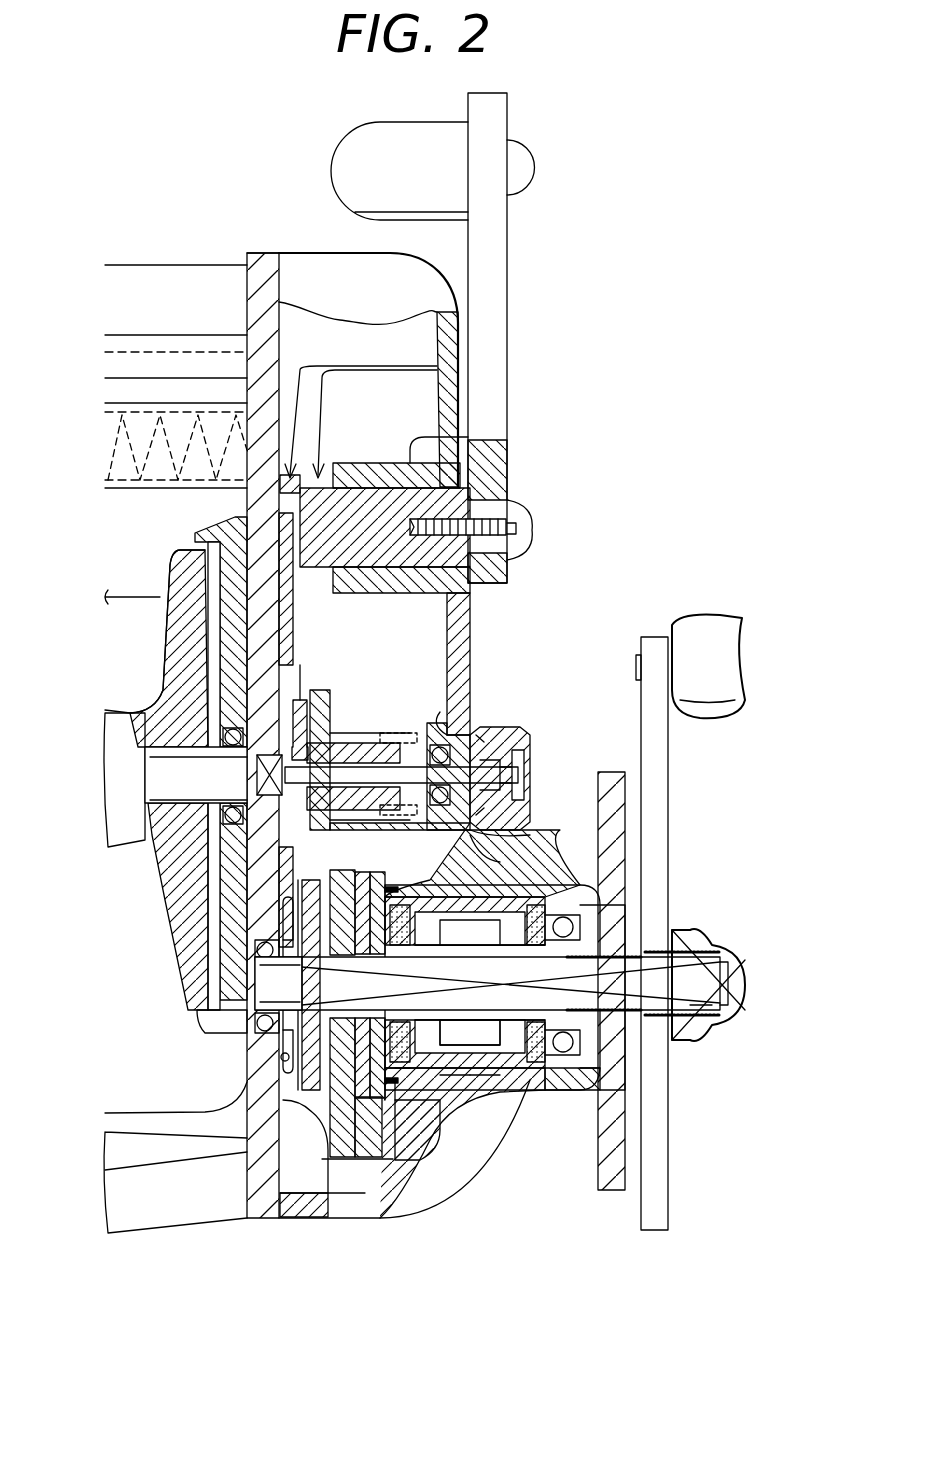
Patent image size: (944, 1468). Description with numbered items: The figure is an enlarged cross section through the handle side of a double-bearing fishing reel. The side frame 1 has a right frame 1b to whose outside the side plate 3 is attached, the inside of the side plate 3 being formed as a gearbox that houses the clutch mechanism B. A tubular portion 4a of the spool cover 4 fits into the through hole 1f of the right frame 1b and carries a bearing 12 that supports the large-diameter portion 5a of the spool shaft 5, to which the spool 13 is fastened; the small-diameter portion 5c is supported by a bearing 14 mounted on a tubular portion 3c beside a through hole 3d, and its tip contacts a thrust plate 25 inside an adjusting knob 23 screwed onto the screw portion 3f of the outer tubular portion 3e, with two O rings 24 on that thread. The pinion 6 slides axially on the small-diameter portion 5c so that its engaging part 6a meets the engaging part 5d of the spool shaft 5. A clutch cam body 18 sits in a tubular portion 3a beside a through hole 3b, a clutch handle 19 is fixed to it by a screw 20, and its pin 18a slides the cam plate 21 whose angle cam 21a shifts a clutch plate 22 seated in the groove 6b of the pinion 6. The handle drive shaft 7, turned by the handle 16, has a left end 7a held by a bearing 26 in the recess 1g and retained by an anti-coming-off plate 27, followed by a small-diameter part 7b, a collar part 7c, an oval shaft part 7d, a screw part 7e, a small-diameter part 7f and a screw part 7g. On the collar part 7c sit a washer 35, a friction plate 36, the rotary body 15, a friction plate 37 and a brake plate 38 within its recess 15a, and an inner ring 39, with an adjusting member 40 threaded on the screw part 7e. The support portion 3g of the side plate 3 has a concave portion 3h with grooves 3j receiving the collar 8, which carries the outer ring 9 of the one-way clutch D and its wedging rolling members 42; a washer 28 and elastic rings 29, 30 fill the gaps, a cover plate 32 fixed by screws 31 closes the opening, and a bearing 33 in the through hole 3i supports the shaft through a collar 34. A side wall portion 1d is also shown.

The side frame 1 is at (266, 250).
The right frame 1b is at (260, 250).
The side wall portion 1d is at (150, 597).
The through hole 1f is at (165, 698).
The recess 1g is at (255, 945).
The side plate 3 is at (316, 250).
The tubular portion 3a is at (480, 438).
The through hole 3b is at (462, 492).
The tubular portion 3c is at (482, 738).
The through hole 3d is at (522, 775).
The tubular portion 3e is at (520, 806).
The screw portion 3f is at (523, 818).
The support portion 3g is at (550, 1092).
The concave portion 3h is at (540, 1092).
The through hole 3i is at (590, 908).
The grooves 3j is at (590, 885).
The spool cover 4 is at (196, 533).
The tubular portion 4a is at (275, 668).
The spool shaft 5 is at (132, 843).
The large-diameter portion 5a is at (222, 748).
The small-diameter portion 5c is at (520, 792).
The engaging part 5d is at (142, 775).
The pinion 6 is at (452, 742).
The engaging part 6a is at (257, 787).
The groove 6b is at (315, 724).
The handle drive shaft 7 is at (716, 983).
The left end 7a is at (280, 985).
The small-diameter part 7b is at (255, 940).
The collar part 7c is at (280, 933).
The shaft part 7d is at (105, 1170).
The screw part 7e is at (690, 1027).
The small-diameter part 7f is at (730, 980).
The screw part 7g is at (717, 993).
The collar 8 is at (490, 1075).
The outer ring 9 is at (455, 1072).
The bearing 12 is at (223, 732).
The spool 13 is at (205, 570).
The bearing 14 is at (518, 732).
The rotary body 15 is at (337, 1165).
The recess 15a is at (357, 1162).
The handle 16 is at (668, 1162).
The clutch cam body 18 is at (300, 368).
The pin 18a is at (230, 490).
The clutch handle 19 is at (503, 226).
The screw 20 is at (522, 504).
The cam plate 21 is at (445, 337).
The angle cam 21a is at (462, 594).
The clutch plate 22 is at (305, 668).
The adjusting knob 23 is at (532, 736).
The O rings 24 is at (477, 824).
The thrust plate 25 is at (526, 755).
The bearing 26 is at (282, 962).
The anti-coming-off plate 27 is at (300, 1092).
The washer 28 is at (412, 897).
The elastic ring 29 is at (380, 1066).
The elastic ring 30 is at (535, 903).
The screws 31 is at (387, 1060).
The cover plate 32 is at (363, 1072).
The bearing 33 is at (578, 1055).
The collar 34 is at (575, 946).
The washer 35 is at (305, 1110).
The friction plate 36 is at (328, 1140).
The friction plate 37 is at (360, 1100).
The brake plate 38 is at (382, 1090).
The inner ring 39 is at (398, 1068).
The adjusting member 40 is at (612, 1195).
The rolling member 42 is at (412, 1073).
The clutch mechanism B is at (435, 716).
The one-way clutch D is at (500, 1085).